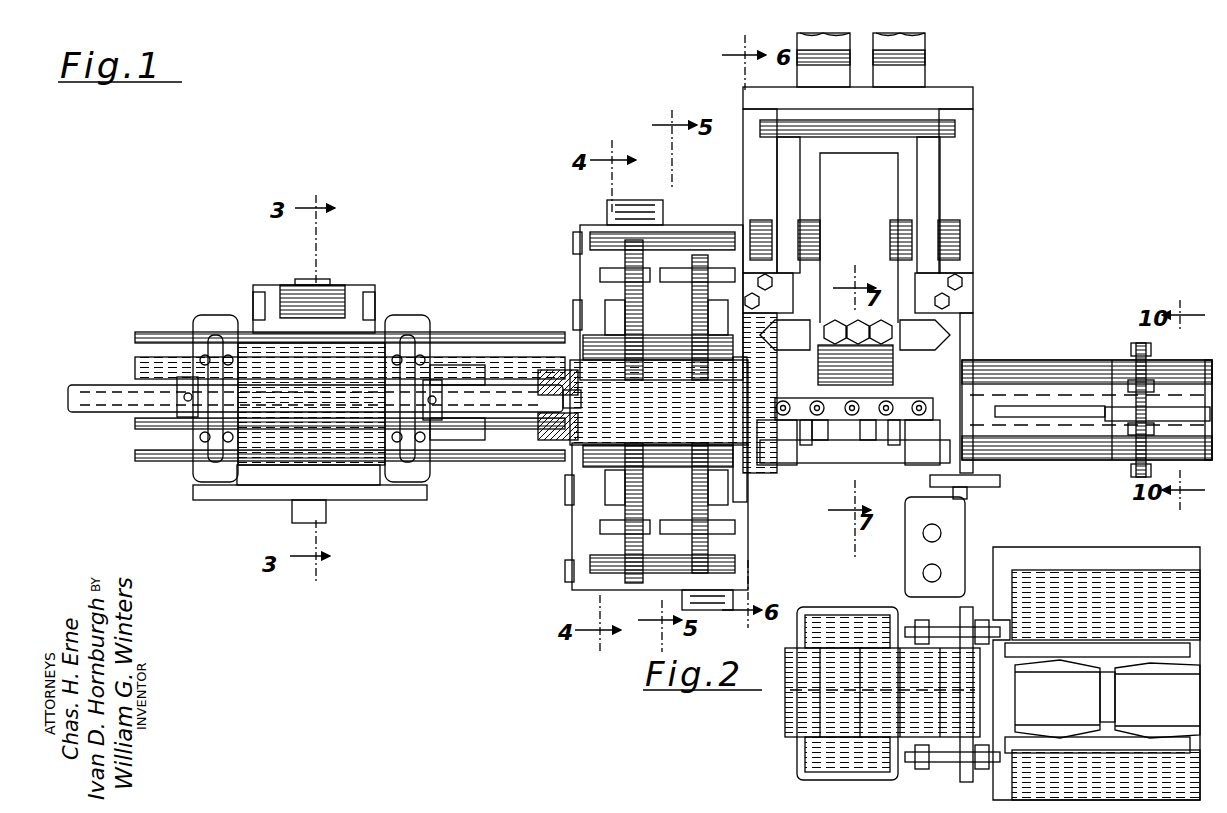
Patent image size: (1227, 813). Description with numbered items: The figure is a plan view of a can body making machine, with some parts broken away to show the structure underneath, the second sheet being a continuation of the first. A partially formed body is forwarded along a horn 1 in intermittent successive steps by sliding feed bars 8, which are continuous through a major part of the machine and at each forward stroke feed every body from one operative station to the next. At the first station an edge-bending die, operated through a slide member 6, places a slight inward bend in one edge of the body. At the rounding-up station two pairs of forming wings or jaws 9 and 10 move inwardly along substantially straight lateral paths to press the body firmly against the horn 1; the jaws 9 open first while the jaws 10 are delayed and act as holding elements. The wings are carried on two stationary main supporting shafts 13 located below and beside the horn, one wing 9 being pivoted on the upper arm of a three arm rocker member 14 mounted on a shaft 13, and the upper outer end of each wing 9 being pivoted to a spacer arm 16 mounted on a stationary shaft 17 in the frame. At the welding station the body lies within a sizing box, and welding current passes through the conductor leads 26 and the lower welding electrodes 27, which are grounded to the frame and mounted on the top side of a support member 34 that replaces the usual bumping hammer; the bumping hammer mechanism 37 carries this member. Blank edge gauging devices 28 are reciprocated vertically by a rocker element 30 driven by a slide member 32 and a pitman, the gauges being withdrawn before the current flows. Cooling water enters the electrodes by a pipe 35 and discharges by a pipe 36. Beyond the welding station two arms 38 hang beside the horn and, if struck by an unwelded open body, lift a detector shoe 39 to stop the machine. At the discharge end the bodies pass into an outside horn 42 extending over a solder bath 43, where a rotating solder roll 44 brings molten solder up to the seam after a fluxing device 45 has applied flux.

In FIG. 1, the horn 1 is at (575, 366).
In FIG. 2, the horn 1 is at (790, 700).
In FIG. 1, the slide member 6 is at (320, 506).
In FIG. 1, the sliding feed bars 8 is at (590, 400).
In FIG. 2, the sliding feed bars 8 is at (800, 712).
In FIG. 1, the forming wings 9 is at (637, 347).
In FIG. 1, the forming wings 10 is at (702, 300).
In FIG. 1, the main supporting shafts 13 is at (570, 318).
In FIG. 1, the three arm rocker member 14 is at (612, 313).
In FIG. 1, the spacer arm 16 is at (612, 258).
In FIG. 1, the stationary shaft 17 is at (580, 243).
In FIG. 1, the conductor leads 26 is at (905, 45).
In FIG. 1, the lower welding electrodes 27 is at (880, 400).
In FIG. 1, the blank edge gauging devices 28 is at (930, 400).
In FIG. 1, the rocker element 30 is at (755, 420).
In FIG. 1, the slide member 32 is at (960, 468).
In FIG. 1, the support member 34 is at (905, 442).
In FIG. 1, the pipe 35 is at (820, 440).
In FIG. 1, the pipe 36 is at (870, 418).
In FIG. 1, the bumping hammer mechanism 37 is at (900, 380).
In FIG. 1, the arms 38 is at (1140, 355).
In FIG. 1, the detector shoe 39 is at (1040, 405).
In FIG. 2, the outside horn 42 is at (1085, 745).
In FIG. 2, the solder bath 43 is at (1115, 590).
In FIG. 2, the solder roll 44 is at (1135, 680).
In FIG. 2, the fluxing device 45 is at (830, 640).